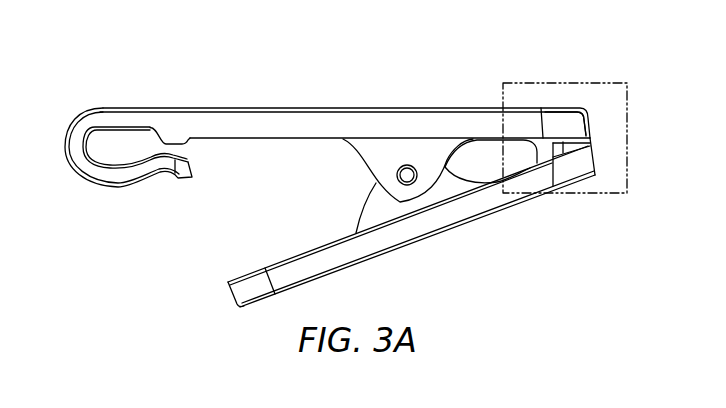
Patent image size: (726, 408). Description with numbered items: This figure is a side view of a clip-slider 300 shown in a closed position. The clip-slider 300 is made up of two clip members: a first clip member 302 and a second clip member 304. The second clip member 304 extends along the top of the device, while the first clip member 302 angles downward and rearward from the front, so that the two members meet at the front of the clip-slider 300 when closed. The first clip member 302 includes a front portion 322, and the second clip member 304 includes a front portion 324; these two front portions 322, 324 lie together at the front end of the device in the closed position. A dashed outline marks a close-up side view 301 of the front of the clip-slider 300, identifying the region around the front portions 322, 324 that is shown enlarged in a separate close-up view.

The clip-slider 300 is at (121, 313).
The close-up side view 301 is at (627, 88).
The first clip member 302 is at (455, 222).
The second clip member 304 is at (346, 125).
The front portion 322 is at (550, 217).
The front portion 324 is at (490, 84).